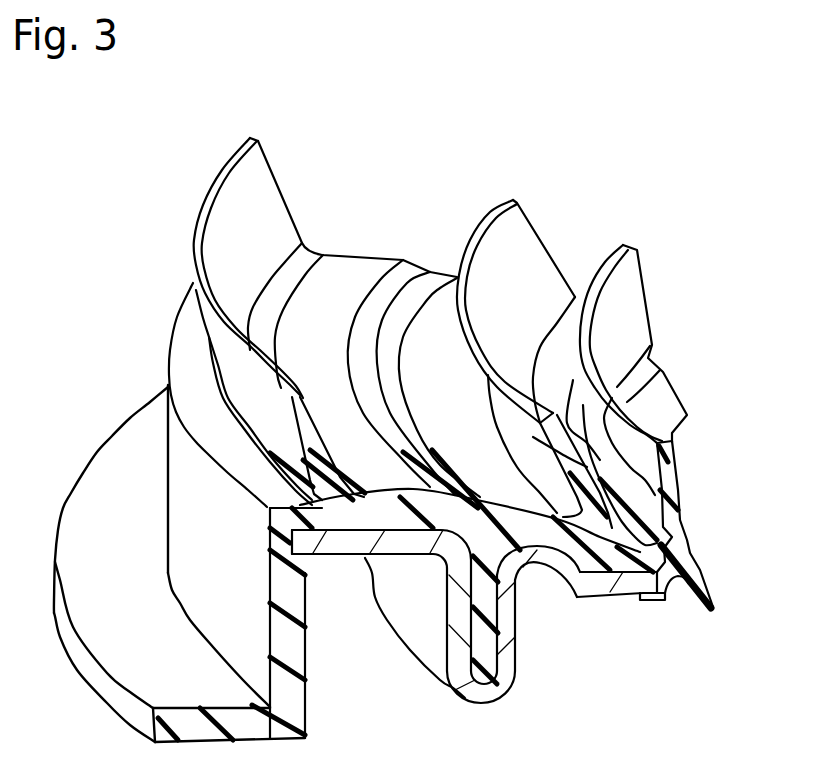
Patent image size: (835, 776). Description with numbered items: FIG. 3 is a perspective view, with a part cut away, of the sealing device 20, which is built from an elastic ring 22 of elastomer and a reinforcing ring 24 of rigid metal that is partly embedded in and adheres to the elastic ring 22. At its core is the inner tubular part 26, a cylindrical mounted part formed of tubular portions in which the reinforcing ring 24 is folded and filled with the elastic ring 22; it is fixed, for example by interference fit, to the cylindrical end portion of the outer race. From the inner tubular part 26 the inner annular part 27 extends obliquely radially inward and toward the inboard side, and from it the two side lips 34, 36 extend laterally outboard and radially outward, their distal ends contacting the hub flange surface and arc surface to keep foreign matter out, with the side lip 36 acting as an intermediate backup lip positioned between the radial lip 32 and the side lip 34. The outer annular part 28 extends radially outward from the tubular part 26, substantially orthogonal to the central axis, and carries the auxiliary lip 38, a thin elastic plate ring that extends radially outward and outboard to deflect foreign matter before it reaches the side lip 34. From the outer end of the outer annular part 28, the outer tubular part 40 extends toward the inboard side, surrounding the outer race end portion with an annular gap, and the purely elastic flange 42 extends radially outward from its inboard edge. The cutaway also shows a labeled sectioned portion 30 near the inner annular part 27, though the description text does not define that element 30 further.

The sealing device 20 is at (138, 367).
The elastic ring 22 is at (275, 540).
The reinforcing ring 24 is at (507, 663).
The inner tubular part 26 is at (480, 705).
The inner annular part 27 is at (540, 563).
The outer annular part 28 is at (350, 557).
The flange 30 is at (595, 580).
The radial lip 32 is at (710, 592).
The side lip 34 is at (490, 215).
The side lip 36 is at (637, 302).
The auxiliary lip 38 is at (195, 237).
The outer tubular part 40 is at (203, 607).
The flange 42 is at (88, 475).